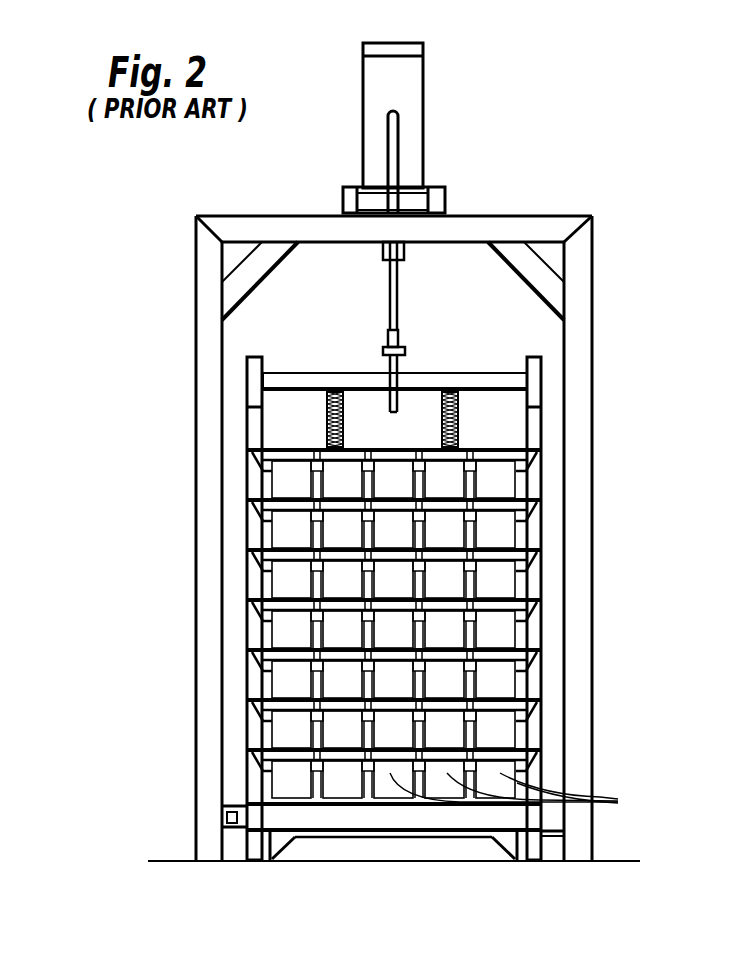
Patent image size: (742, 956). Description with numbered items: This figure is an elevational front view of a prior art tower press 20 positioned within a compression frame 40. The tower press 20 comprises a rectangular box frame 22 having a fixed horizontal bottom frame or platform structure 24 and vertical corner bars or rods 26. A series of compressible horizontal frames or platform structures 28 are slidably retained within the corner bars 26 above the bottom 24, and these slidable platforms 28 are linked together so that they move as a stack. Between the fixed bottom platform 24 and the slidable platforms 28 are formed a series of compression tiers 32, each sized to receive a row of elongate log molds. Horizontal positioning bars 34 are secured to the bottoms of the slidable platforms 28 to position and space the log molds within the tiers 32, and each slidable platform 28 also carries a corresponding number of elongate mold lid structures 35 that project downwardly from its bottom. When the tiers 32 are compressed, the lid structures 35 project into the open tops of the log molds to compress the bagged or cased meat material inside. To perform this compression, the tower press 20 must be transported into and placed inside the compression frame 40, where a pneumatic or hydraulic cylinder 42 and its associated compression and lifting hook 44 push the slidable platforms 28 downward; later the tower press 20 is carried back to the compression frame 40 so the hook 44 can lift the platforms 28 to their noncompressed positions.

The tower press 20 is at (377, 551).
The rectangular box frame 22 is at (310, 375).
The fixed horizontal bottom frame or platform structure 24 is at (285, 820).
The vertical corner bars or rods 26 is at (247, 423).
The slidable horizontal platform structures 28 is at (538, 450).
The compression tiers 32 is at (287, 485).
The horizontal positioning bars 34 is at (257, 476).
The elongate mold lid structures 35 is at (523, 793).
The compression frame 40 is at (205, 222).
The pneumatic or hydraulic cylinder 42 is at (410, 117).
The compression and lifting hook 44 is at (388, 347).